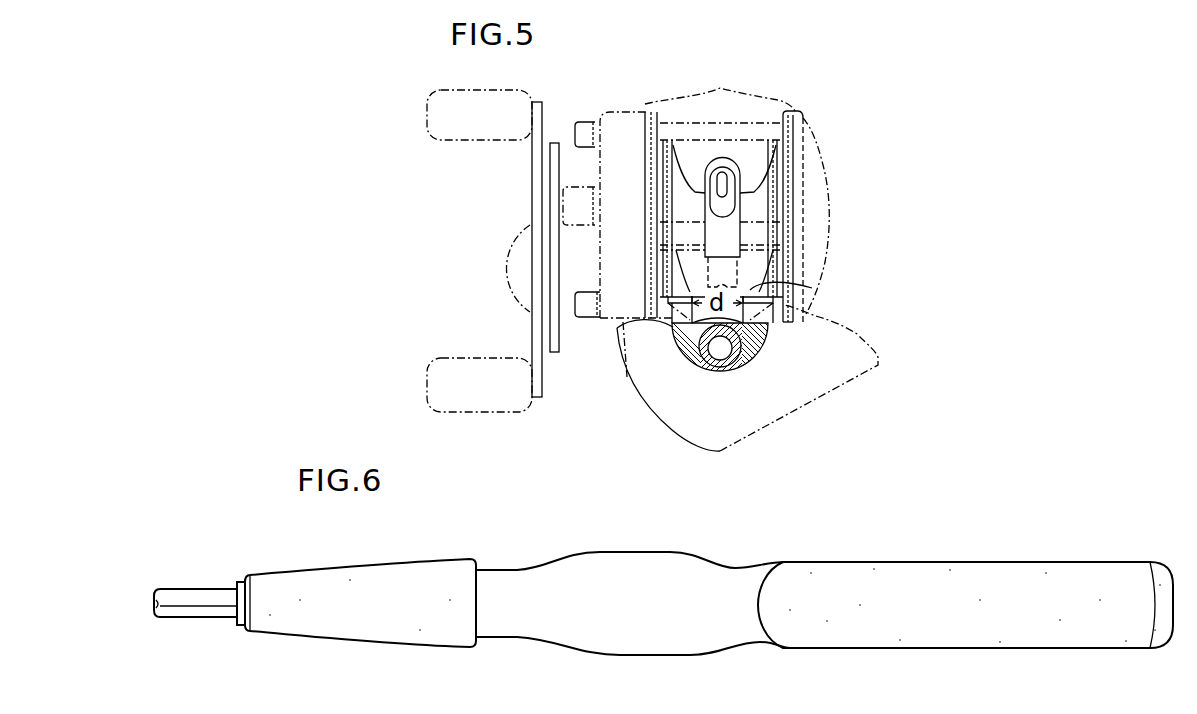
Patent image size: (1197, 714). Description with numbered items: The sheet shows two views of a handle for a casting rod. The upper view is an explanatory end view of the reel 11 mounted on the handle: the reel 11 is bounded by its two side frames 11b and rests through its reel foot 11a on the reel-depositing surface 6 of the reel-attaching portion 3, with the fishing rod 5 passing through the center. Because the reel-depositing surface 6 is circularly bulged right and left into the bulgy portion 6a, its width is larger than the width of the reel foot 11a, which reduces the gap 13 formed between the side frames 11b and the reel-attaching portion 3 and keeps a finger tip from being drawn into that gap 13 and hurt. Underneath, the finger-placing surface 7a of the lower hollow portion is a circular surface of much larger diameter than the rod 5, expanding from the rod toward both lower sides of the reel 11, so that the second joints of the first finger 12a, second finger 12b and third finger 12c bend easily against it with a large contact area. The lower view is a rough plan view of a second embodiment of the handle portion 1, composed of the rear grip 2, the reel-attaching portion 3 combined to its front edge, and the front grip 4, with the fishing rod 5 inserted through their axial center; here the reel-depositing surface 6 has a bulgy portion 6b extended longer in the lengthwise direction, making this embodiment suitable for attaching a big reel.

In FIG. 6, the handle portion 1 is at (965, 579).
In FIG. 6, the rear grip 2 is at (995, 562).
In FIG. 6, the reel-attaching portion 3 is at (731, 565).
In FIG. 6, the front grip 4 is at (344, 566).
In FIG. 5, the fishing rod 5 is at (710, 377).
In FIG. 6, the fishing rod 5 is at (191, 596).
In FIG. 5, the reel-depositing surface 6 is at (714, 360).
In FIG. 6, the reel-depositing surface 6 is at (633, 606).
In FIG. 5, the bulgy portion 6a is at (767, 327).
In FIG. 6, the bulgy portion 6b is at (613, 553).
In FIG. 5, the finger-placing surface 7a is at (762, 352).
In FIG. 5, the reel 11 is at (827, 173).
In FIG. 5, the reel foot 11a is at (812, 288).
In FIG. 5, the side frames 11b is at (722, 82).
In FIG. 5, the first finger 12a is at (806, 378).
In FIG. 5, the second finger 12b is at (803, 424).
In FIG. 5, the third finger 12c is at (806, 378).
In FIG. 5, the gap 13 is at (618, 327).